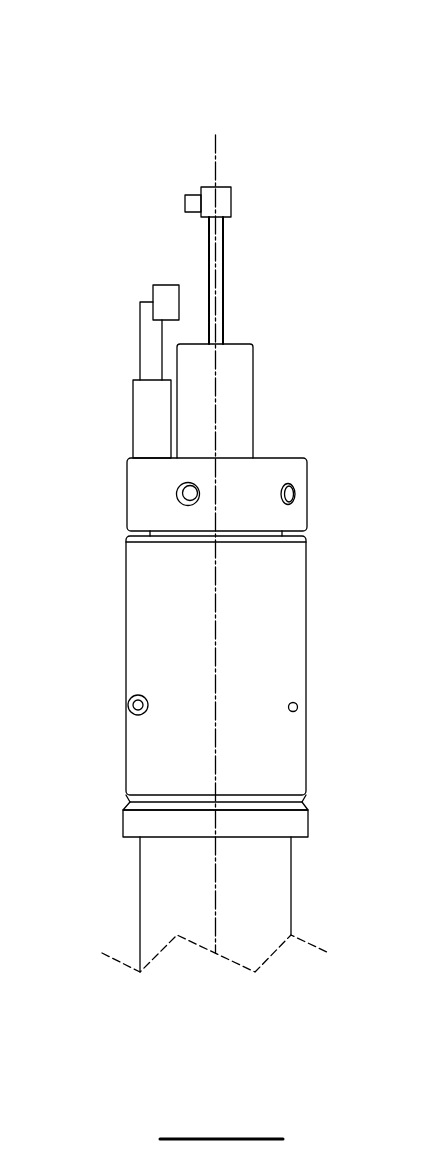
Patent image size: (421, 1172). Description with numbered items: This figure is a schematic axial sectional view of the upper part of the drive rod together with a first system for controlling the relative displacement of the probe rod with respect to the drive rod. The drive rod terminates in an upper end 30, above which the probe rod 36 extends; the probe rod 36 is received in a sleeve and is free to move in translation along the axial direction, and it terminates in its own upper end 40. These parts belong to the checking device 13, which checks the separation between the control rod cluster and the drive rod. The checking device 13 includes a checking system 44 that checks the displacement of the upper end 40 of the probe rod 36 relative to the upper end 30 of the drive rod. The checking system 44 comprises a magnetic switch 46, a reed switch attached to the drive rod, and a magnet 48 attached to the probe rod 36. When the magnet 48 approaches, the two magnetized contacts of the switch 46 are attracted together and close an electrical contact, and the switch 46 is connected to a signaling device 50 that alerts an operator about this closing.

The checking device 13 is at (80, 119).
The checking system 44 is at (98, 275).
The magnet 48 is at (193, 203).
The upper end of the probe rod 40 is at (222, 202).
The probe rod 36 is at (217, 276).
The magnetic switch 46 is at (161, 300).
The signaling device 50 is at (143, 420).
The upper end of the drive rod 30 is at (232, 400).